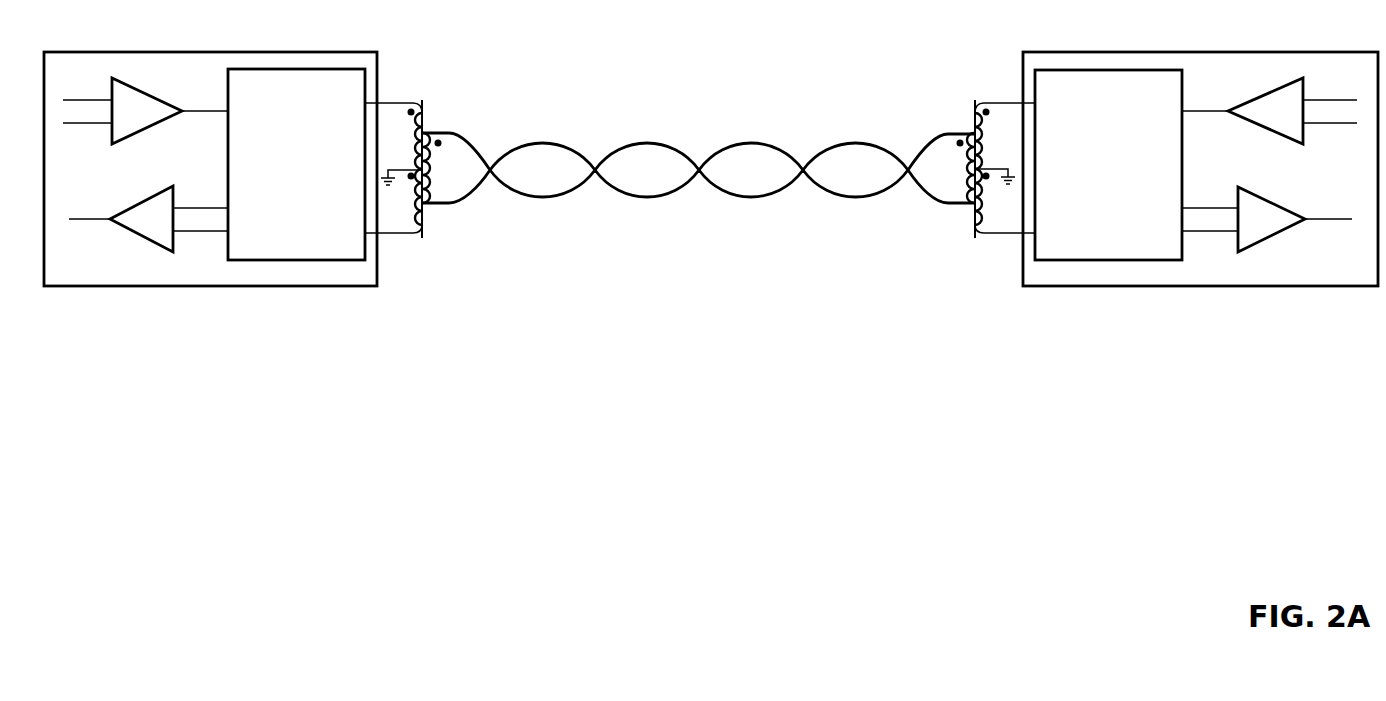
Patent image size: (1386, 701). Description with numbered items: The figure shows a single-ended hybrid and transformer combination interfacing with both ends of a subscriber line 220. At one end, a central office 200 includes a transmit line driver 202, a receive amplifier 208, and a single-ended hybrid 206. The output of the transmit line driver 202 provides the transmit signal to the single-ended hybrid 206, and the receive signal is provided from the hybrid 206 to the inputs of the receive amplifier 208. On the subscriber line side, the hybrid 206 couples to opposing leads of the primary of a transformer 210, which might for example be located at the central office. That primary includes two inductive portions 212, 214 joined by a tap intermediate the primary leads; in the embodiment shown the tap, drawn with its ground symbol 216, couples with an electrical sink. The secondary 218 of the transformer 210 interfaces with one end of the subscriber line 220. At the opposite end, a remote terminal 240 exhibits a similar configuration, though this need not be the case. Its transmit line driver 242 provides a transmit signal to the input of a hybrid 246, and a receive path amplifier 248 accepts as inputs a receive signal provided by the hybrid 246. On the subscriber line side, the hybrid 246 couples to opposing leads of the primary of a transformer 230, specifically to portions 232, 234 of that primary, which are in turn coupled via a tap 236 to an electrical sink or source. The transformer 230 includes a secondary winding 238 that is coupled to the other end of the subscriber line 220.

The central office 200 is at (148, 52).
The transmit line driver 202 is at (145, 97).
The single-ended hybrid 206 is at (235, 143).
The receive amplifier 208 is at (156, 200).
The transformer 210 is at (435, 72).
The inductive portion 212 is at (424, 118).
The inductive portion 214 is at (424, 223).
The center tap ground 216 is at (413, 162).
The secondary 218 is at (432, 178).
The subscriber line 220 is at (652, 142).
The transformer 230 is at (967, 79).
The inductive portion 232 is at (975, 118).
The inductive portion 234 is at (975, 222).
The tap 236 is at (991, 166).
The secondary winding 238 is at (964, 173).
The remote terminal 240 is at (1262, 52).
The transmit line driver 242 is at (1276, 96).
The hybrid 246 is at (1170, 143).
The receiver 248 is at (1257, 197).